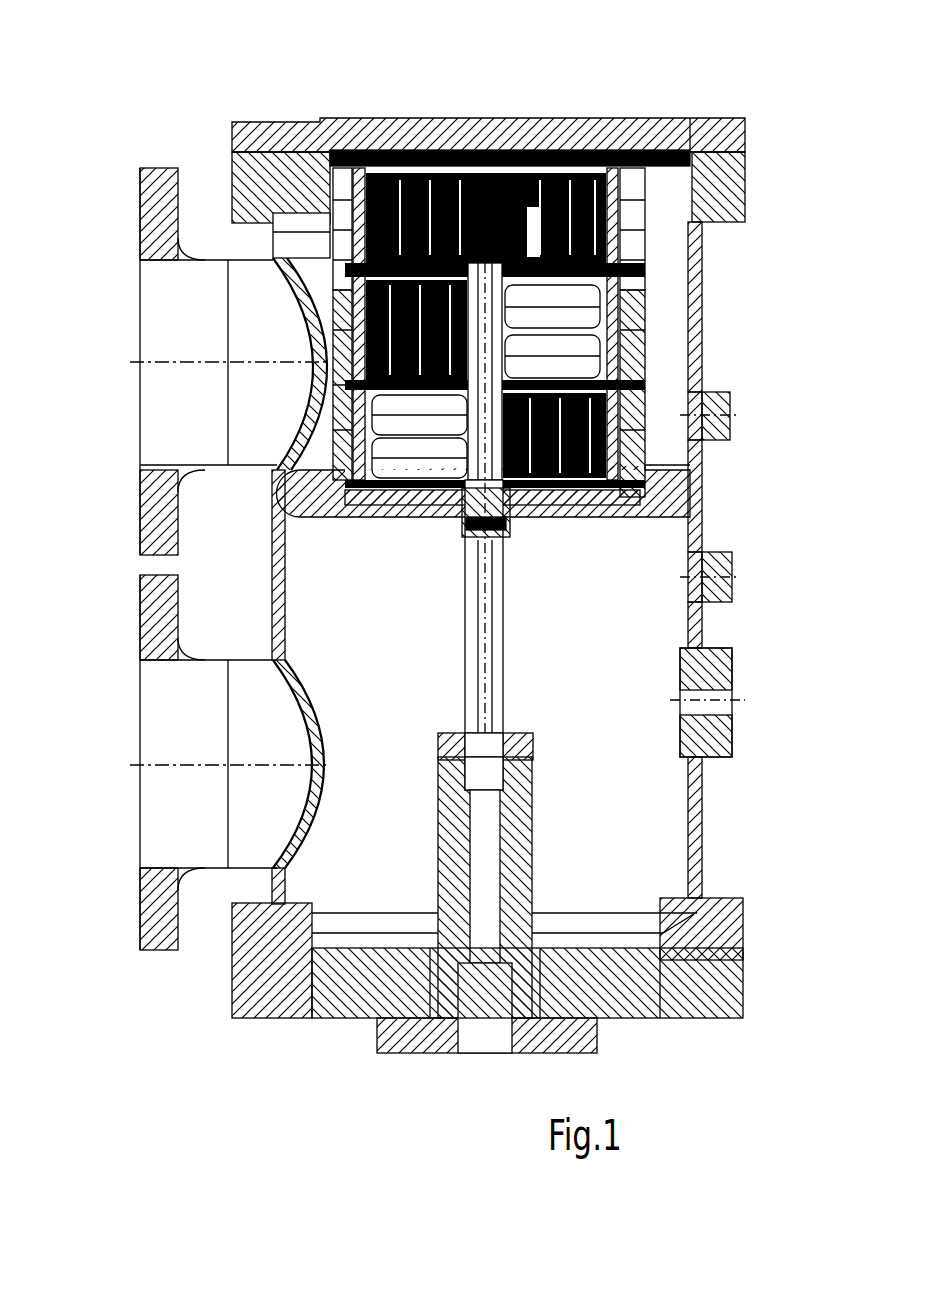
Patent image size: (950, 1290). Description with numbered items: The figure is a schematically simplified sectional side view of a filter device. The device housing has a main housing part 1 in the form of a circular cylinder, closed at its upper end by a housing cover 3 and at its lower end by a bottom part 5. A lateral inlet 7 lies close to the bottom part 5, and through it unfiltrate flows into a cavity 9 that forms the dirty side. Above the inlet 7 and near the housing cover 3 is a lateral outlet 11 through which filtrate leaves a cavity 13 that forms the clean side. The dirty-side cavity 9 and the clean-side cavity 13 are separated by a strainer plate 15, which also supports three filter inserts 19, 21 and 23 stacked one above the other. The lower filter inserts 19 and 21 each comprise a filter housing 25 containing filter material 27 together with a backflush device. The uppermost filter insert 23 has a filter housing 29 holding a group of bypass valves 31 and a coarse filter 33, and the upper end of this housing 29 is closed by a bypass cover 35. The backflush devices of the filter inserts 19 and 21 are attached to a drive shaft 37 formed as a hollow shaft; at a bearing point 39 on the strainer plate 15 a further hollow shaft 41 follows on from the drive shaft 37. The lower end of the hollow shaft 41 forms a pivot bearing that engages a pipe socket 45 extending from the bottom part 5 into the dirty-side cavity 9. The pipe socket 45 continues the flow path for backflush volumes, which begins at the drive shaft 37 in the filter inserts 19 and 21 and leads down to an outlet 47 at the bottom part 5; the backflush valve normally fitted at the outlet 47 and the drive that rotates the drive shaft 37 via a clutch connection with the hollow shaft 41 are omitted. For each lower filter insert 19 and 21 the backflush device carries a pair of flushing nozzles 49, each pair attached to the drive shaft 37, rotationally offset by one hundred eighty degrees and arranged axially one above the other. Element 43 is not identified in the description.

The main housing part 1 is at (702, 532).
The housing cover 3 is at (667, 117).
The bottom part 5 is at (650, 975).
The lateral inlet 7 is at (140, 860).
The cavity 9 is at (635, 778).
The lateral outlet 11 is at (140, 432).
The cavity 13 is at (702, 282).
The strainer plate 15 is at (667, 473).
The filter insert 19 is at (730, 415).
The filter insert 21 is at (647, 353).
The filter insert 23 is at (745, 192).
The filter housing 25 is at (340, 375).
The filter material 27 is at (333, 440).
The filter housing 29 is at (330, 192).
The bypass valves 31 is at (528, 118).
The coarse filter 33 is at (345, 240).
The bypass cover 35 is at (370, 125).
The drive shaft 37 is at (467, 525).
The bearing point 39 is at (502, 518).
The hollow shaft 41 is at (503, 660).
The shaft collar 43 is at (522, 747).
The pipe socket 45 is at (520, 880).
The outlet 47 is at (468, 1055).
The flushing nozzles 49 is at (390, 480).